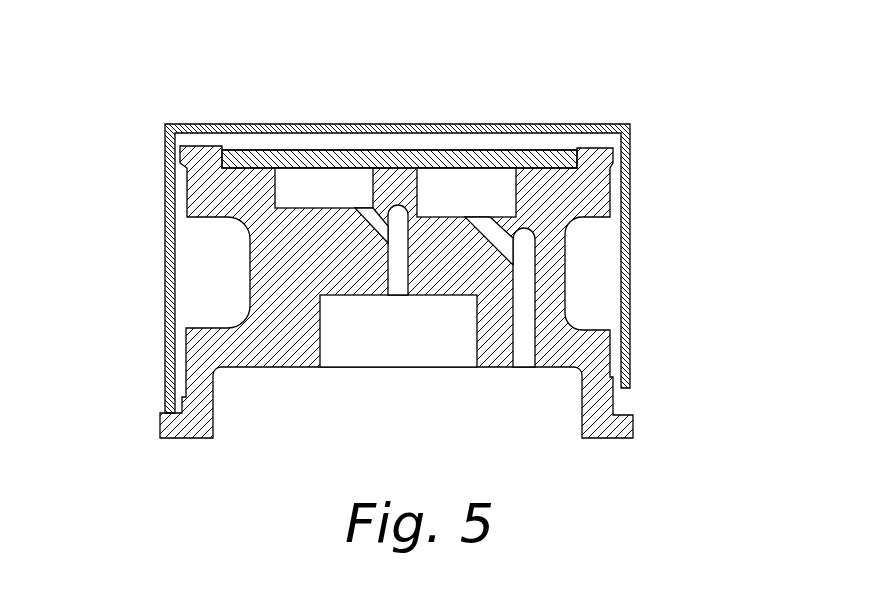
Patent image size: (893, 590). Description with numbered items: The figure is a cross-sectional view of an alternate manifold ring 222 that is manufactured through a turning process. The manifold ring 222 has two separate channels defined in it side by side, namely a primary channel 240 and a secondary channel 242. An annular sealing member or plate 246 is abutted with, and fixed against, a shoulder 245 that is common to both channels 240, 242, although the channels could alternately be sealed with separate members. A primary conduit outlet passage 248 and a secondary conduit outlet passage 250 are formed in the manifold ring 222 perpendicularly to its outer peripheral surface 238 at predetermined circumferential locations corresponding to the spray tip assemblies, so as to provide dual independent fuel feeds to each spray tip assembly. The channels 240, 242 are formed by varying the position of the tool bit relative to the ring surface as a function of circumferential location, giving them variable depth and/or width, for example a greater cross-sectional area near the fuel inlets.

The manifold ring 222 is at (530, 145).
The outer peripheral surface 238 is at (587, 147).
The primary channel 240 is at (347, 184).
The secondary channel 242 is at (490, 186).
The shoulder 245 is at (537, 168).
The annular sealing member or plate 246 is at (313, 147).
The primary conduit outlet passage 248 is at (386, 274).
The secondary conduit outlet passage 250 is at (523, 320).